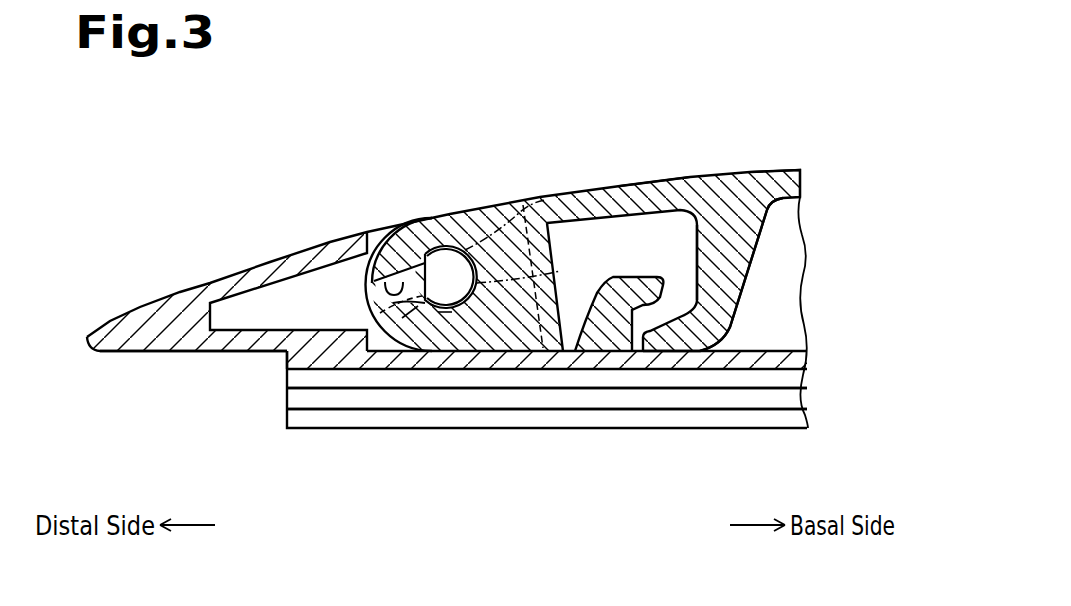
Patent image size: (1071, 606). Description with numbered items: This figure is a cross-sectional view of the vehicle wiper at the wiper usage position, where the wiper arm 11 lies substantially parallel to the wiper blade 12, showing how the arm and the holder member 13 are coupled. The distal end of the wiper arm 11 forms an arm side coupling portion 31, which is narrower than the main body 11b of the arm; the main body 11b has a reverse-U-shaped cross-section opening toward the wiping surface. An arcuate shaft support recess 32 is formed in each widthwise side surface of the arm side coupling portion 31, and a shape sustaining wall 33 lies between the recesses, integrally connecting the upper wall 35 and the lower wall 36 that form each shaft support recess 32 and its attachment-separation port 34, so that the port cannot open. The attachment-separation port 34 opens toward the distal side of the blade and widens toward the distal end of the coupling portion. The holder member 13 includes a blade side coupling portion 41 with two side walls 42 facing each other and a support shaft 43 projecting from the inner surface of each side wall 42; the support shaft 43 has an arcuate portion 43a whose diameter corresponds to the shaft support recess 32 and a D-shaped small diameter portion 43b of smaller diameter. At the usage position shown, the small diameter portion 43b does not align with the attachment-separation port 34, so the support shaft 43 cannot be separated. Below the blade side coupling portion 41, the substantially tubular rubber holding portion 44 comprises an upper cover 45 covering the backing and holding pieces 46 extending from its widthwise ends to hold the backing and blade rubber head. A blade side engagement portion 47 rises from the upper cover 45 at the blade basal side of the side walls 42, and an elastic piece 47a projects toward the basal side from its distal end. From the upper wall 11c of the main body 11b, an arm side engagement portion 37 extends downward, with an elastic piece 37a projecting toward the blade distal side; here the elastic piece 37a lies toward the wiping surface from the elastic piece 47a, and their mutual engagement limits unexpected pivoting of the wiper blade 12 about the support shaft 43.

The wiper arm 11 is at (630, 183).
The main body 11b is at (773, 170).
The upper wall 11c is at (677, 182).
The wiper blade 12 is at (193, 291).
The holder member 13 is at (227, 275).
The arm side coupling portion 31 is at (368, 232).
The shaft support recess 32 is at (445, 250).
The shape sustaining wall 33 is at (410, 313).
The attachment-separation port 34 is at (376, 283).
The upper wall 35 is at (408, 237).
The lower wall 36 is at (445, 310).
The arm side engagement portion 37 is at (756, 255).
The elastic piece 37a is at (660, 338).
The blade side coupling portion 41 is at (388, 342).
The side wall 42 is at (551, 239).
The support shaft 43 is at (558, 272).
The arcuate portion 43a is at (503, 213).
The small diameter portion 43b is at (378, 312).
The rubber holding portion 44 is at (505, 428).
The upper cover 45 is at (758, 360).
The holding piece 46 is at (592, 398).
The blade side engagement portion 47 is at (620, 277).
The elastic piece 47a is at (660, 275).